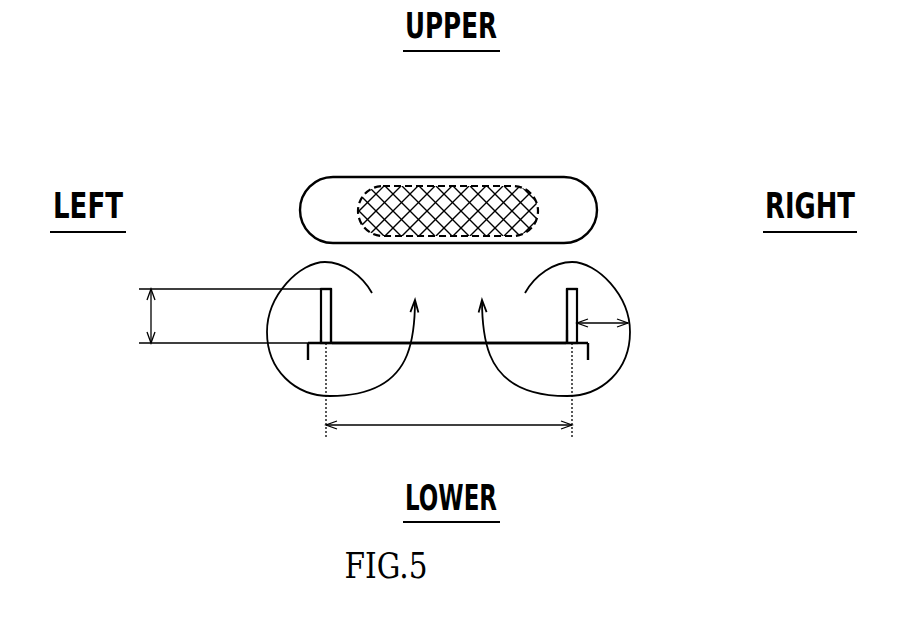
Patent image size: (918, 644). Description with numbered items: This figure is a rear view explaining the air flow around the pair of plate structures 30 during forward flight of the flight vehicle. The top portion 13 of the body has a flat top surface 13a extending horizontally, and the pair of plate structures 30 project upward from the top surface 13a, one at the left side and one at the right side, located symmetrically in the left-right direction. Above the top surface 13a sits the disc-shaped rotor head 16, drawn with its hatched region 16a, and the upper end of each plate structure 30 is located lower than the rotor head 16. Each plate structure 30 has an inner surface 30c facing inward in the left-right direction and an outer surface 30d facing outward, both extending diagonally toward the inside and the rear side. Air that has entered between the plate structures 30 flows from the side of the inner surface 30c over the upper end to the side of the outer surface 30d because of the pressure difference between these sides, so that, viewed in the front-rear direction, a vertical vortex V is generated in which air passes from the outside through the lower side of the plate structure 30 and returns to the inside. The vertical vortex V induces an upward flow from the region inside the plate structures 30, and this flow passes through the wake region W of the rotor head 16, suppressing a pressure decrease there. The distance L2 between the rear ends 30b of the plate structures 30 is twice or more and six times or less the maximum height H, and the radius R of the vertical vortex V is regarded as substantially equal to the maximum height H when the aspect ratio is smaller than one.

The top portion 13 is at (589, 353).
The top surface 13a is at (445, 343).
The rotor head 16 is at (333, 177).
The nozzle opening 16a is at (443, 203).
The plate structure 30 is at (320, 300).
The rear end 30b is at (320, 288).
The inner surface 30c is at (332, 320).
The outer surface 30d is at (313, 328).
The wake region W is at (497, 180).
The vertical vortex V is at (293, 392).
The maximum height H is at (224, 316).
The radius R is at (603, 320).
The distance L2 is at (449, 402).